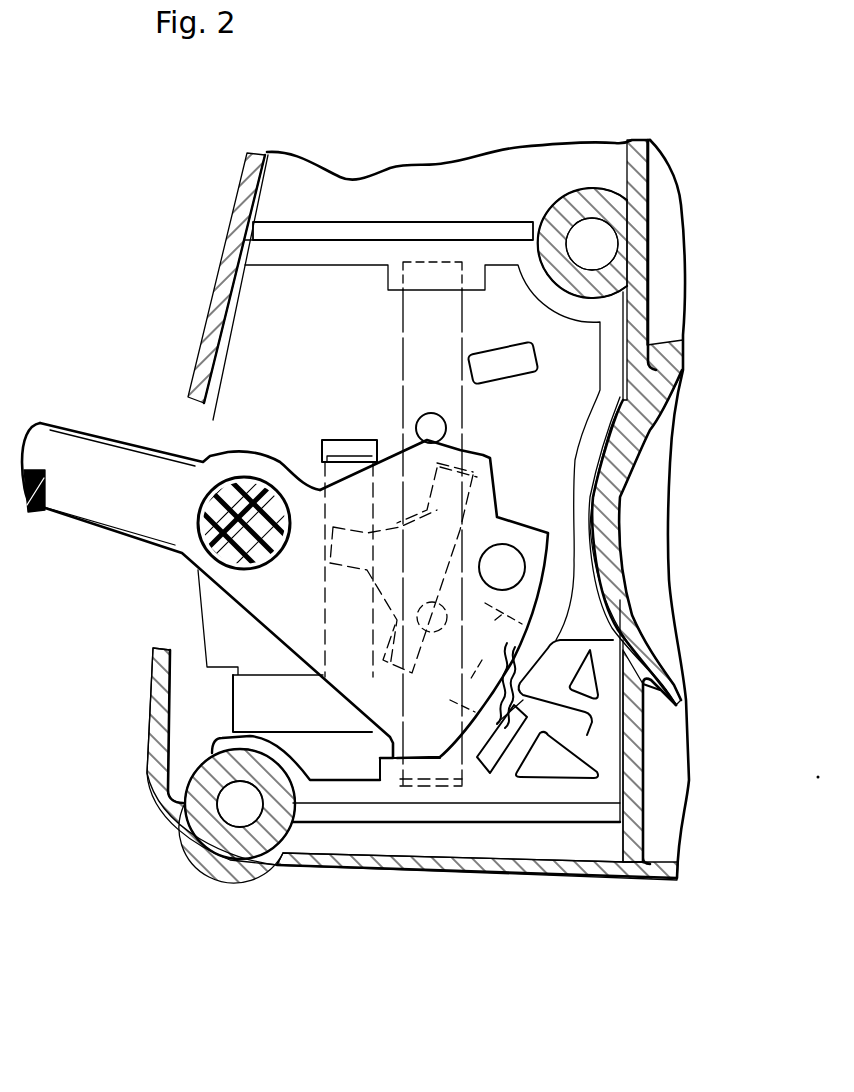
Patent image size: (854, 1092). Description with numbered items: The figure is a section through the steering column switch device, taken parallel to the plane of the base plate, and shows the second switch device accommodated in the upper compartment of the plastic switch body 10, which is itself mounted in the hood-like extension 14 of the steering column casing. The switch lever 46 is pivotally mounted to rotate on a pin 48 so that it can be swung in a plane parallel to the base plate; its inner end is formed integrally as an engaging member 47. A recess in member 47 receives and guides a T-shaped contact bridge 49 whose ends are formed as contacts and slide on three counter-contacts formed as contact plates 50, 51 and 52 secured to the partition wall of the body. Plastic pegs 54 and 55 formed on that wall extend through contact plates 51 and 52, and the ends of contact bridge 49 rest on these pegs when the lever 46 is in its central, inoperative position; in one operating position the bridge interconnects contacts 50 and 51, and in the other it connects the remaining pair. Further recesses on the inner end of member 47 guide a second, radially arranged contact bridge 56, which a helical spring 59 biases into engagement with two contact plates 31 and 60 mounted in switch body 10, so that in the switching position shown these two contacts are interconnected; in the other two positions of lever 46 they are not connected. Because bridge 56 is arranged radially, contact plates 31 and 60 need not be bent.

The switch body 10 is at (612, 310).
The hood-like extension 14 is at (650, 207).
The contact plate 31 is at (600, 740).
The switch lever 46 is at (108, 458).
The engaging member 47 is at (533, 543).
The pin 48 is at (250, 512).
The T-shaped contact bridge 49 is at (497, 490).
The contact plate 50 is at (260, 698).
The contact plate 51 is at (434, 317).
The contact plate 52 is at (455, 757).
The plastic peg 54 is at (445, 420).
The plastic peg 55 is at (447, 608).
The contact bridge 56 is at (455, 757).
The helical spring 59 is at (517, 643).
The contact plate 60 is at (540, 710).